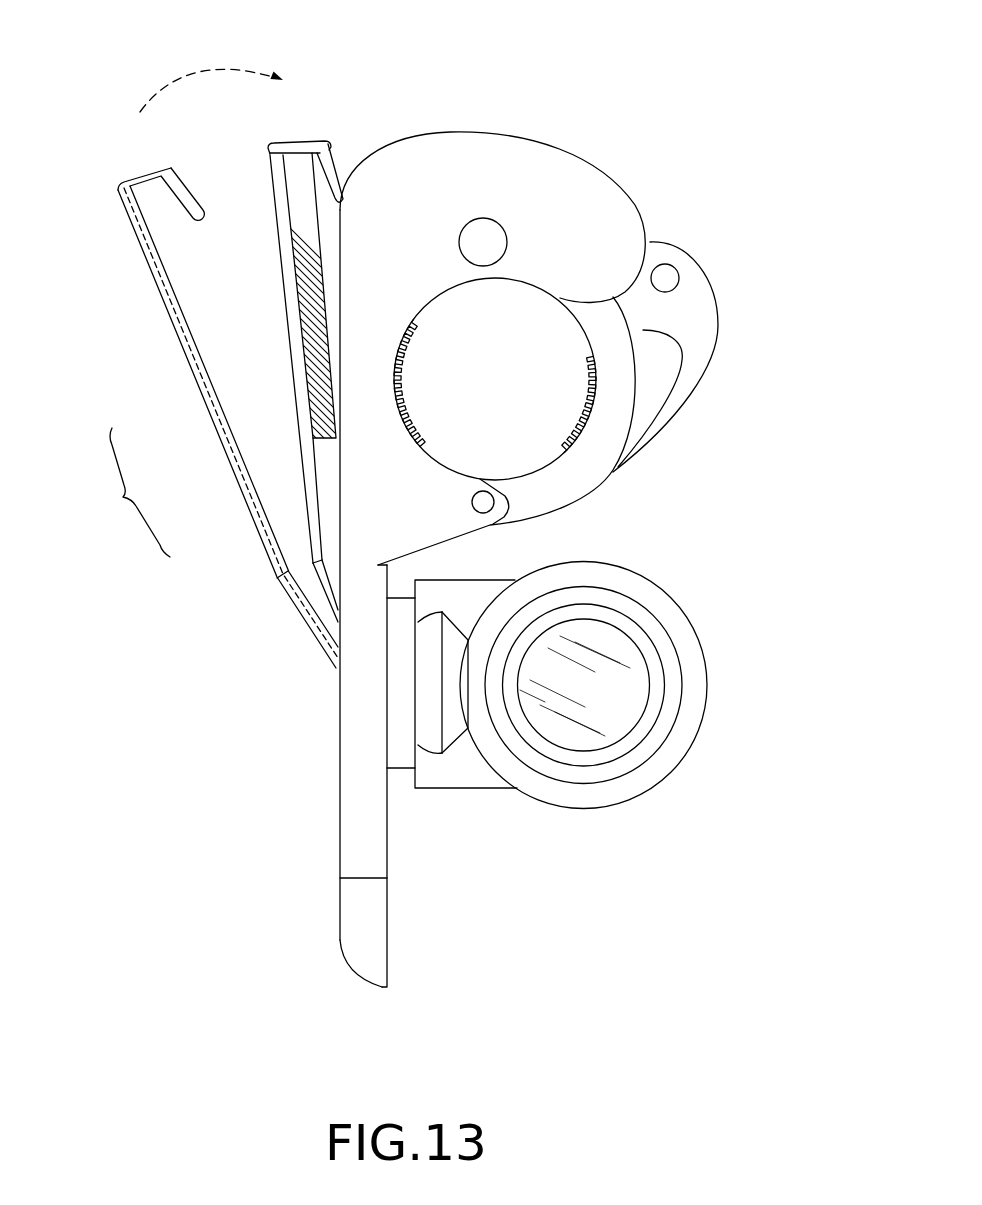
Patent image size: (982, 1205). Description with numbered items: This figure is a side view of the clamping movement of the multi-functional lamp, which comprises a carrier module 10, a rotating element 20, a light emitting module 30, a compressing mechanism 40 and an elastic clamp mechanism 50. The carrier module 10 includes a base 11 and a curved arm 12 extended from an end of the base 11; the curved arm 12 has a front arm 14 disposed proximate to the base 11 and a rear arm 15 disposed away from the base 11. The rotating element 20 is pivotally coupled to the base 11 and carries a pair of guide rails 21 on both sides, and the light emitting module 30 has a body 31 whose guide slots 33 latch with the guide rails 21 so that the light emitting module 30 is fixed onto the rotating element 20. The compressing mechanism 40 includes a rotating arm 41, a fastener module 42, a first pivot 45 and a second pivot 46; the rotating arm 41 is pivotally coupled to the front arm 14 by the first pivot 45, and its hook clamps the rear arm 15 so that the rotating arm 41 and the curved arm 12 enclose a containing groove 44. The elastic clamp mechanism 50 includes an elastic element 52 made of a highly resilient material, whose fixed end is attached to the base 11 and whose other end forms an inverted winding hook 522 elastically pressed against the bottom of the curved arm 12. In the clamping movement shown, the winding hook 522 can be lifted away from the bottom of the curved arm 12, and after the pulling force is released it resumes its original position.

The carrier module 10 is at (337, 840).
The base 11 is at (360, 903).
The curved arm 12 is at (129, 492).
The front arm 14 is at (430, 502).
The rear arm 15 is at (307, 307).
The rotating element 20 is at (400, 772).
The guide rails 21 is at (430, 622).
The light emitting module 30 is at (708, 655).
The body 31 is at (480, 776).
The guide slots 33 is at (428, 600).
The compressing mechanism 40 is at (720, 288).
The rotating arm 41 is at (578, 480).
The fastener module 42 is at (668, 415).
The containing groove 44 is at (527, 330).
The first pivot 45 is at (494, 502).
The second pivot 46 is at (484, 240).
The elastic clamp mechanism 50 is at (268, 174).
The elastic element 52 is at (283, 267).
The winding hook 522 is at (323, 140).